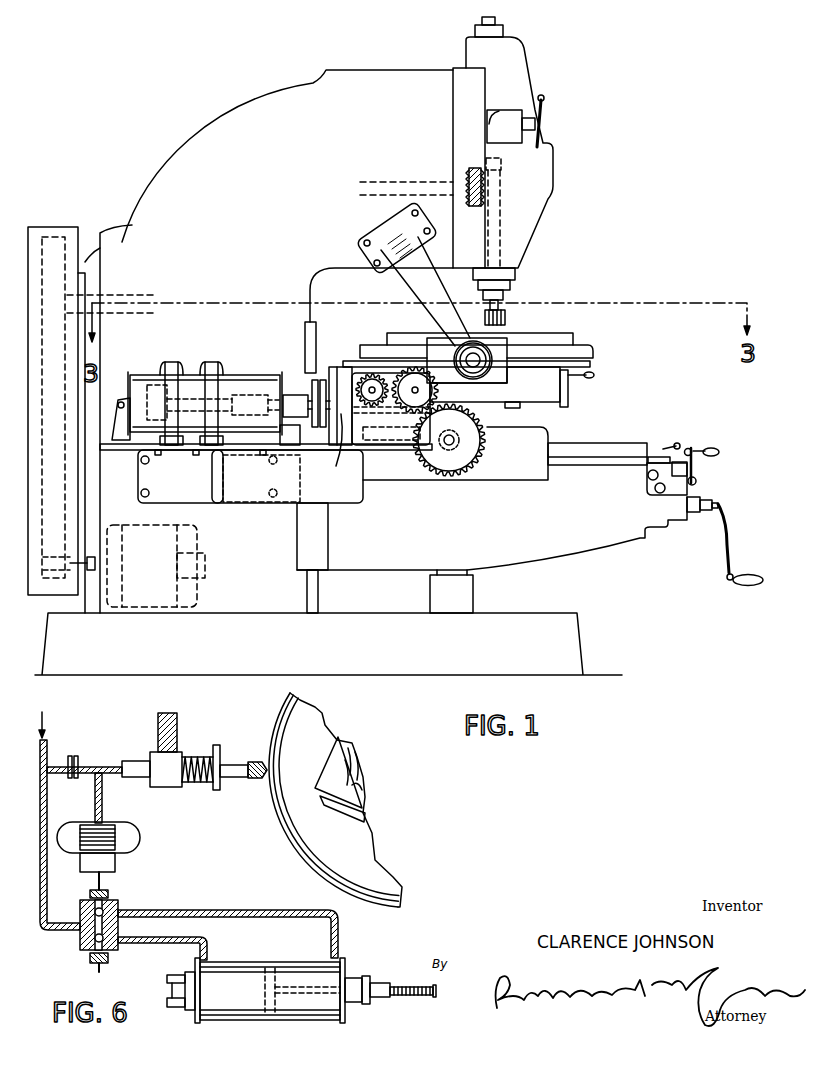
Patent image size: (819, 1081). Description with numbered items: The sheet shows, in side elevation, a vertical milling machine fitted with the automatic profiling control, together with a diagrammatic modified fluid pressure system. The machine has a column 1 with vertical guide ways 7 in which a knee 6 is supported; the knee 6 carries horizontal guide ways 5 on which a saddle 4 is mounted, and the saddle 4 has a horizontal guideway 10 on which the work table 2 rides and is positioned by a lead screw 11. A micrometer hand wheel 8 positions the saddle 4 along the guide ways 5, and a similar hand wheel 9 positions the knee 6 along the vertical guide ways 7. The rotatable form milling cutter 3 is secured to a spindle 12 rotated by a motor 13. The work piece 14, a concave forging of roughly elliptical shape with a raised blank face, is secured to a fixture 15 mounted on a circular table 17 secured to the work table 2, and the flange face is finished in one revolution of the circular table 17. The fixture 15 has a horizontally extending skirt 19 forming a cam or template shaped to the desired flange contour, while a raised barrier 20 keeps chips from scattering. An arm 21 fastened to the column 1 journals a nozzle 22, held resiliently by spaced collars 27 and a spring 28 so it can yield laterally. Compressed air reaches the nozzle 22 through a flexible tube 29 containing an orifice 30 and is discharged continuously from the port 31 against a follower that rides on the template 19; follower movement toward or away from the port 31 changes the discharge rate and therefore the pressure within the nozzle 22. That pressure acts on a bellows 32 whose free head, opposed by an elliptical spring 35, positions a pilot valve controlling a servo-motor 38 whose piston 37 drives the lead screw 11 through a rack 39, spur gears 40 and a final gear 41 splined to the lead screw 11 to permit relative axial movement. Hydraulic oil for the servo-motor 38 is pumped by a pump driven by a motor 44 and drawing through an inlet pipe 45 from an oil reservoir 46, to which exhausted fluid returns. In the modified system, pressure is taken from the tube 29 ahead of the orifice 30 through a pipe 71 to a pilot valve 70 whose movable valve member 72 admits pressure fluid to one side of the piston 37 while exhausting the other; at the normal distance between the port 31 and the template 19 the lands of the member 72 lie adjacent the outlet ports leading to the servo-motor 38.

In FIG. 1, the column 1 is at (186, 152).
In FIG. 1, the work table 2 is at (533, 414).
In FIG. 1, the form milling cutter 3 is at (506, 318).
In FIG. 6, the form milling cutter 3 is at (355, 770).
In FIG. 1, the saddle 4 is at (538, 480).
In FIG. 1, the horizontal guide ways 5 is at (607, 443).
In FIG. 1, the knee 6 is at (597, 550).
In FIG. 1, the vertical guide ways 7 is at (320, 605).
In FIG. 1, the micrometer hand wheel 8 is at (684, 460).
In FIG. 1, the hand wheel 9 is at (727, 535).
In FIG. 1, the horizontal guideway 10 is at (488, 430).
In FIG. 1, the lead screw 11 is at (446, 455).
In FIG. 1, the spindle 12 is at (503, 301).
In FIG. 1, the motor 13 is at (192, 538).
In FIG. 1, the work piece 14 is at (550, 325).
In FIG. 6, the work piece 14 is at (363, 787).
In FIG. 6, the fixture 15 is at (332, 748).
In FIG. 1, the circular table 17 is at (517, 404).
In FIG. 1, the skirt 19 is at (600, 360).
In FIG. 6, the skirt 19 is at (312, 870).
In FIG. 1, the raised barrier 20 is at (595, 352).
In FIG. 6, the raised barrier 20 is at (300, 843).
In FIG. 1, the arm 21 is at (402, 284).
In FIG. 6, the arm 21 is at (177, 722).
In FIG. 6, the nozzle 22 is at (258, 788).
In FIG. 6, the spaced collars 27 is at (152, 787).
In FIG. 6, the spring 28 is at (192, 787).
In FIG. 6, the flexible tube 29 is at (47, 743).
In FIG. 6, the orifice 30 is at (72, 755).
In FIG. 6, the port 31 is at (262, 758).
In FIG. 6, the bellows 32 is at (82, 838).
In FIG. 6, the elliptical spring 35 is at (140, 835).
In FIG. 6, the piston 37 is at (258, 985).
In FIG. 1, the servo-motor 38 is at (249, 374).
In FIG. 6, the servo-motor 38 is at (287, 963).
In FIG. 1, the rack 39 is at (327, 449).
In FIG. 6, the rack 39 is at (407, 983).
In FIG. 1, the spur gears 40 is at (333, 372).
In FIG. 1, the final gear 41 is at (483, 452).
In FIG. 1, the motor 44 is at (188, 362).
In FIG. 1, the inlet pipe 45 is at (293, 490).
In FIG. 1, the oil reservoir 46 is at (350, 505).
In FIG. 6, the pilot valve 70 is at (117, 903).
In FIG. 6, the pipe 71 is at (62, 930).
In FIG. 6, the movable valve member 72 is at (103, 882).